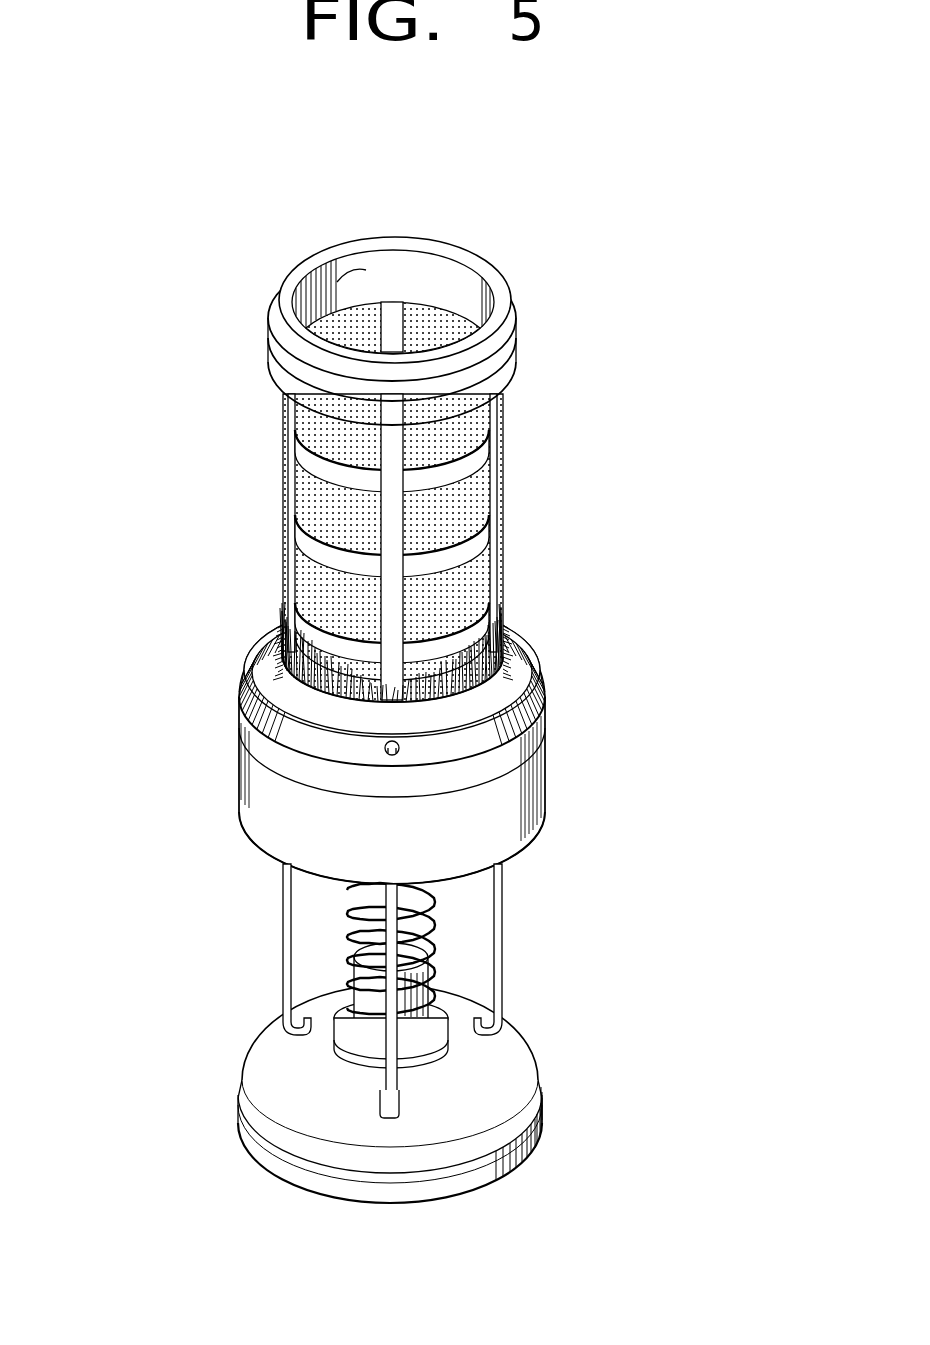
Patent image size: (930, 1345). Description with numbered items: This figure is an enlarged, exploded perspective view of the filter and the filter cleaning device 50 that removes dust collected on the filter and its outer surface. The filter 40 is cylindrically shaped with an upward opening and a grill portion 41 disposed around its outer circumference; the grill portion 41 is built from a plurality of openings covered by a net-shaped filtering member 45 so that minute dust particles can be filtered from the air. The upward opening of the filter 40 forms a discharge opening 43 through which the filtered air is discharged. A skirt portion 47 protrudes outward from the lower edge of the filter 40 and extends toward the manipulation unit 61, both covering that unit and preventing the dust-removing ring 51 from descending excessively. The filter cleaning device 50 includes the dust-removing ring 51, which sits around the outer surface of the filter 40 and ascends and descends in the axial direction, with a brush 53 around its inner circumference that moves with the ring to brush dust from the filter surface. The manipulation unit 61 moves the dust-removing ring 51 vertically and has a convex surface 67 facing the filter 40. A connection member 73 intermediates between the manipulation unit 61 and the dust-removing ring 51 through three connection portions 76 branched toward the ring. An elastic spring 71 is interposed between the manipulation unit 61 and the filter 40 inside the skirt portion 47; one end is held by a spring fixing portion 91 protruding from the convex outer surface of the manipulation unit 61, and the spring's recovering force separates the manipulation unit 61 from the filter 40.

The filter 40 is at (345, 411).
The grill portion 41 is at (430, 302).
The discharge opening 43 is at (337, 282).
The net-shaped filtering member 45 is at (470, 512).
The skirt portion 47 is at (520, 783).
The filter cleaning device 50 is at (393, 1063).
The dust-removing ring 51 is at (533, 647).
The brush 53 is at (272, 637).
The manipulation unit 61 is at (280, 1170).
The convex surface 67 is at (465, 1103).
The elastic spring 71 is at (432, 897).
The connection member 73 is at (295, 991).
The connection portions 76 is at (285, 907).
The spring fixing portion 91 is at (432, 973).